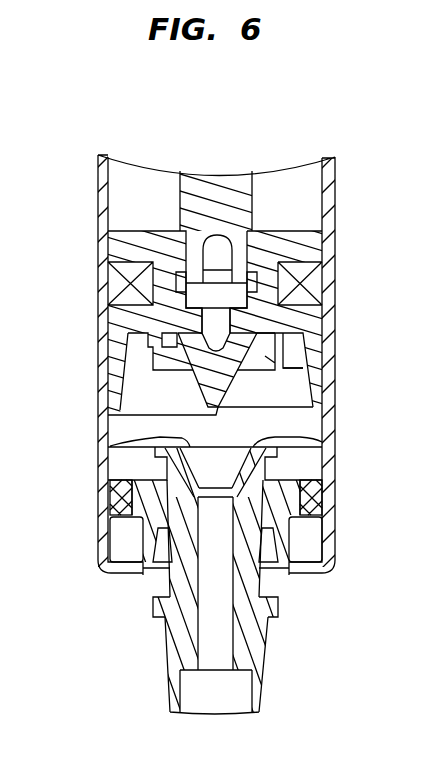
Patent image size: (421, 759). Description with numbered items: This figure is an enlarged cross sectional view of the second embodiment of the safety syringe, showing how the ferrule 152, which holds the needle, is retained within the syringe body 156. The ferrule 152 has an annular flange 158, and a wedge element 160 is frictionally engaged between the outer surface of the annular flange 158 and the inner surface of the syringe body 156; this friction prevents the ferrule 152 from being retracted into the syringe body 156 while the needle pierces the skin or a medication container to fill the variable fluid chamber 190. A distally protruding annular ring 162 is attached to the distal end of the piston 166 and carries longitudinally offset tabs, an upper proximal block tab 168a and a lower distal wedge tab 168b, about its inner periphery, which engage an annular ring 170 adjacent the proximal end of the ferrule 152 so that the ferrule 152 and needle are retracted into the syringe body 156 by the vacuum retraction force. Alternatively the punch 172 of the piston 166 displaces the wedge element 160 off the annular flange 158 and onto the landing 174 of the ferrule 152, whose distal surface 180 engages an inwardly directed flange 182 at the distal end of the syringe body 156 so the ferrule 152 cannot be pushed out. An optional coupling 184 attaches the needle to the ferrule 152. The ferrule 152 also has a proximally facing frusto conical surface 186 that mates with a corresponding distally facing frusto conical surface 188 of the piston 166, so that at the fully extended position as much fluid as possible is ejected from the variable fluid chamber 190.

The ferrule 152 is at (265, 630).
The syringe body 156 is at (330, 193).
The annular flange 158 is at (290, 483).
The wedge element 160 is at (307, 502).
The annular ring 162 is at (298, 336).
The piston 166 is at (290, 237).
The upper proximal block tab 168a is at (170, 343).
The lower distal wedge tab 168b is at (315, 362).
The annular ring 170 is at (268, 438).
The punch 172 is at (313, 343).
The landing 174 is at (290, 535).
The distal surface 180 is at (278, 570).
The inwardly directed flange 182 is at (285, 556).
The coupling 184 is at (262, 687).
The proximally facing frusto conical surface 186 is at (150, 442).
The distally facing frusto conical surface 188 is at (190, 372).
The variable fluid chamber 190 is at (300, 412).